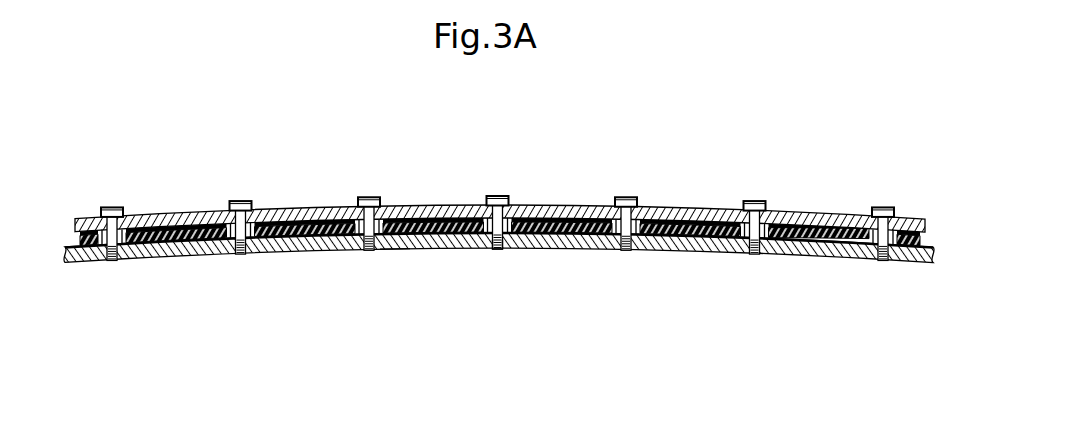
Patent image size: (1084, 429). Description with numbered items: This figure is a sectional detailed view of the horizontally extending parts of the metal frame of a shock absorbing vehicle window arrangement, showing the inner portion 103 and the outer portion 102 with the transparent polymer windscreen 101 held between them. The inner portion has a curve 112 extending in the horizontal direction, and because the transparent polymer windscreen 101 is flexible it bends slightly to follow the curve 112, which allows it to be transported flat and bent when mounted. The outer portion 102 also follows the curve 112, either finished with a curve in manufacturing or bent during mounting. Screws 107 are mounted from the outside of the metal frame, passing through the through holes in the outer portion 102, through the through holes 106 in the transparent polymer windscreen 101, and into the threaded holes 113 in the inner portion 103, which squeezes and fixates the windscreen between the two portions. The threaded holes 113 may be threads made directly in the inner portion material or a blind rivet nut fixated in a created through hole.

The transparent polymer windscreen 101 is at (673, 218).
The outer portion 102 is at (830, 216).
The inner portion 103 is at (838, 249).
The through hole 106 is at (507, 243).
The screw 107 is at (372, 198).
The curve 112 is at (393, 250).
The threaded hole 113 is at (488, 248).